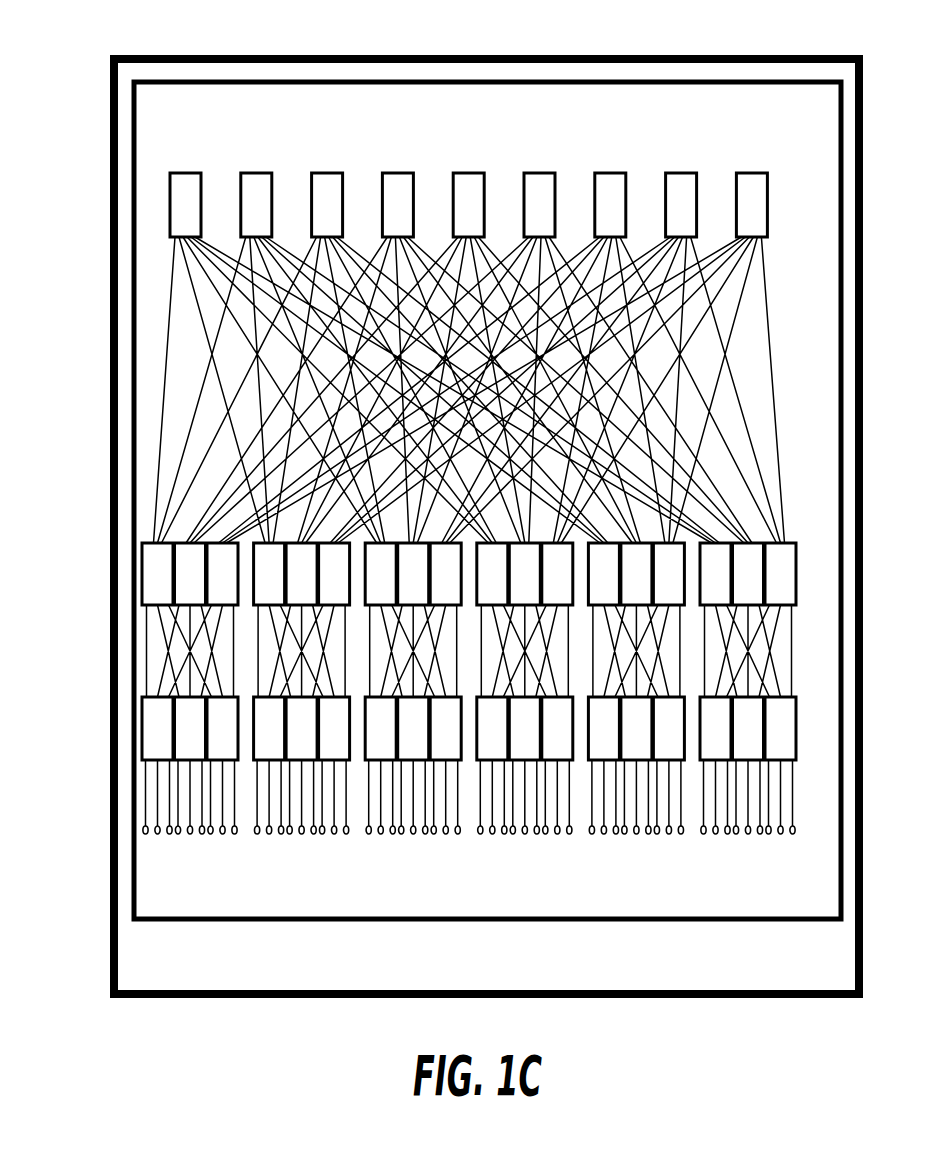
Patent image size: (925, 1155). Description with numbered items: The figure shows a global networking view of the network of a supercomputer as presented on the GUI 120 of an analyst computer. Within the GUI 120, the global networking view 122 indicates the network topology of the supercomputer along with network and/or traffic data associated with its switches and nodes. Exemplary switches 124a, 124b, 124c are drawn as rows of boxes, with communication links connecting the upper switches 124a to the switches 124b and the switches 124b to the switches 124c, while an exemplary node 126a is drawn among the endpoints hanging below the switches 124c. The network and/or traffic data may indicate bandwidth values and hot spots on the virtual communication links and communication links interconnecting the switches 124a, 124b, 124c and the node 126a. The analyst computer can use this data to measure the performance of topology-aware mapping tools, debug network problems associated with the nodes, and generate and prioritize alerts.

The GUI 120 is at (487, 45).
The global networking view 122 is at (620, 903).
The switch 124a is at (170, 208).
The switch 124b is at (142, 575).
The switch 124c is at (142, 733).
The node 126a is at (142, 828).